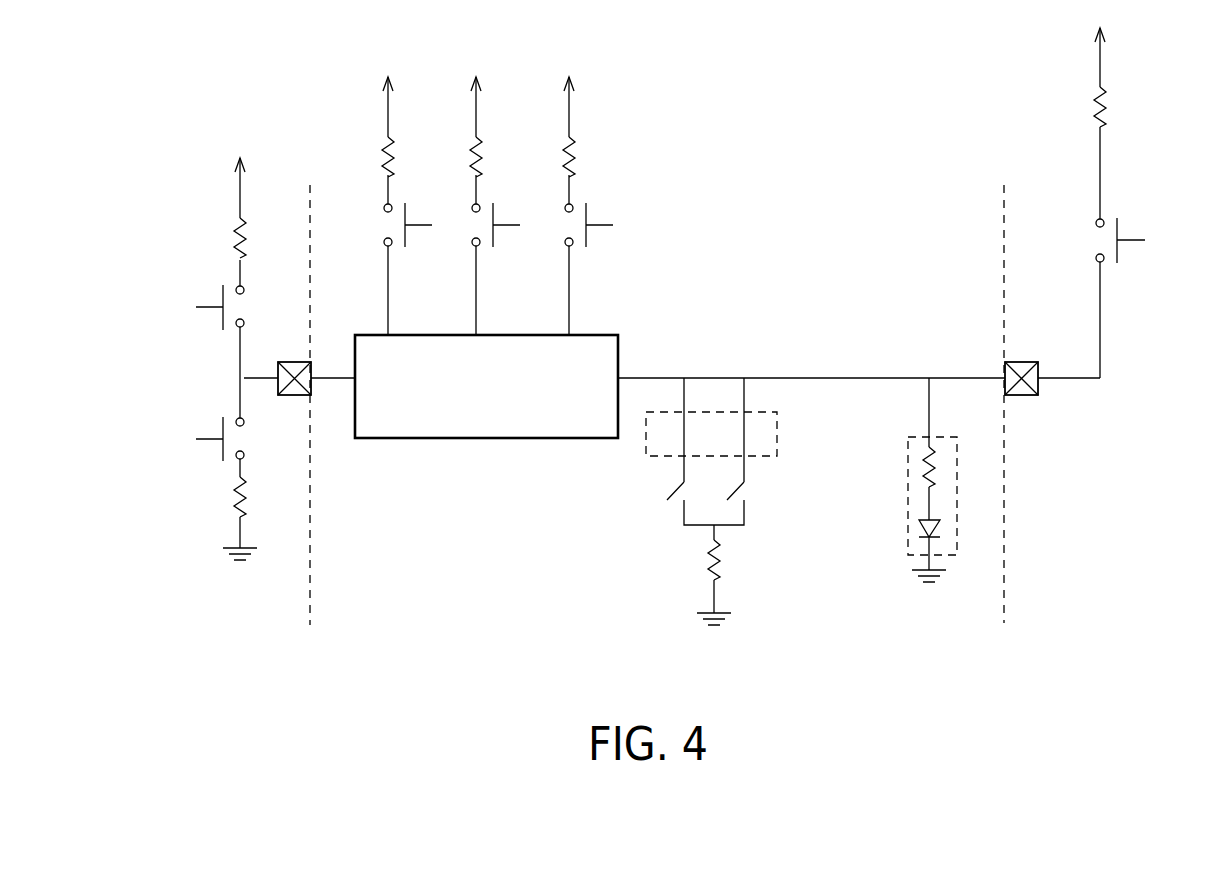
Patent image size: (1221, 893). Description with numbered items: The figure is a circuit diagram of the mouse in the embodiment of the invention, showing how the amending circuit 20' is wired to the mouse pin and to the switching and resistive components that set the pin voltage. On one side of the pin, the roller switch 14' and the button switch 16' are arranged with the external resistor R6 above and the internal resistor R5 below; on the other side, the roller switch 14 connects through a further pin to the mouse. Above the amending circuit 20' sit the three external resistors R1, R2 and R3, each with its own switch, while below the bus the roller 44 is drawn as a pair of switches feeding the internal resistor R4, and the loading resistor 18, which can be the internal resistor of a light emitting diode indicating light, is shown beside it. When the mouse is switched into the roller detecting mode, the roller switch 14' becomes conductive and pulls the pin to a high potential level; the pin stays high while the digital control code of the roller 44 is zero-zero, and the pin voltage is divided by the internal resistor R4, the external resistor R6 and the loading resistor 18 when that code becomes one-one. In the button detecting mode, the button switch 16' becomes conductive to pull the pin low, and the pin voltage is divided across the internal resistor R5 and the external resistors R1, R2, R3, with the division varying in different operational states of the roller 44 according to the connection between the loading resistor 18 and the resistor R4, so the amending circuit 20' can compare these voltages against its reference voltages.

The roller switch 14 is at (1136, 203).
The roller switch 14' is at (203, 209).
The button switch 16' is at (203, 431).
The loading resistor 18 is at (908, 490).
The amending circuit 20' is at (486, 413).
The roller 44 is at (777, 433).
The external resistor R1 is at (570, 206).
The external resistor R2 is at (476, 206).
The external resistor R3 is at (387, 206).
The internal resistor R4 is at (730, 582).
The internal resistor R5 is at (254, 518).
The external resistor R6 is at (260, 208).